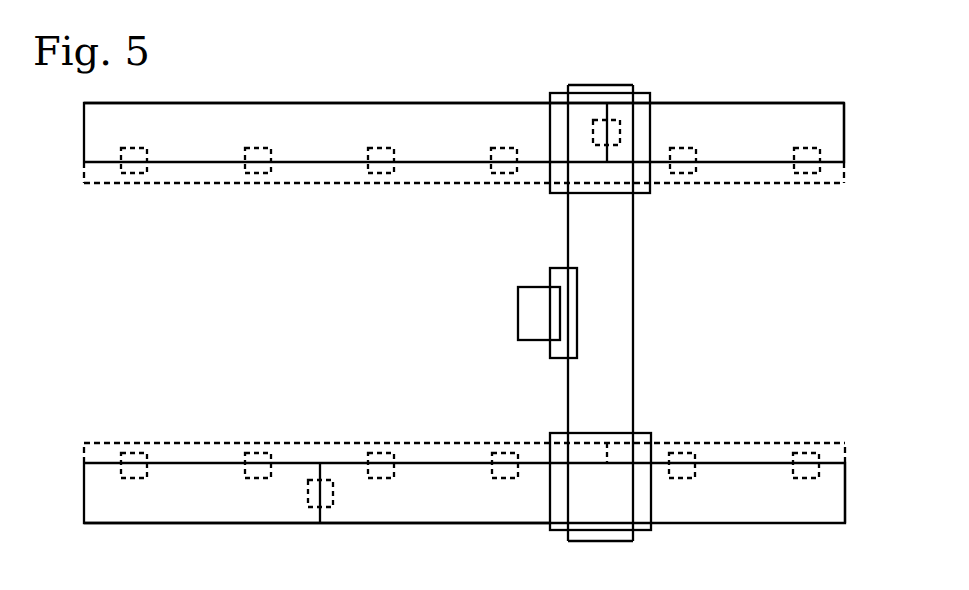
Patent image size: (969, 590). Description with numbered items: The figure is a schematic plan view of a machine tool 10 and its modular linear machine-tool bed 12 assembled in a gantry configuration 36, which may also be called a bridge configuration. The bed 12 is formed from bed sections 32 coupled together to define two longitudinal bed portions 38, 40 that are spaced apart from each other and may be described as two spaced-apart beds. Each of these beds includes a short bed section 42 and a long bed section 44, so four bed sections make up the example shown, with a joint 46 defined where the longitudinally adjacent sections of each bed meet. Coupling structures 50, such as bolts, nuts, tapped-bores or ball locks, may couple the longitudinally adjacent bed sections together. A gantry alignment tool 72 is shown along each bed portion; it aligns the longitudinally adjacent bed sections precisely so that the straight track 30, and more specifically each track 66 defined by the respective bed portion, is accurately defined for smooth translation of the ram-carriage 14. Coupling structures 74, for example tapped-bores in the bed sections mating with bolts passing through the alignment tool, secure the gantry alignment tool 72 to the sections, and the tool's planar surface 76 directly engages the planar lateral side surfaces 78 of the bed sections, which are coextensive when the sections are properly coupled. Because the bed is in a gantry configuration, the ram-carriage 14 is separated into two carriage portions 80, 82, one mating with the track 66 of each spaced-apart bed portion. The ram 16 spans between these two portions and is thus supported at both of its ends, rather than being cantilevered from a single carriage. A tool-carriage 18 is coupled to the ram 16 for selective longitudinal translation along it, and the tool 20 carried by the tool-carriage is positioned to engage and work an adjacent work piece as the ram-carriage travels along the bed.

The machine tool 10 is at (804, 41).
The modular linear machine-tool bed 12 is at (687, 44).
The ram-carriage 14 is at (645, 87).
The ram 16 is at (633, 312).
The tool-carriage 18 is at (558, 268).
The tool 20 is at (518, 312).
The straight track 30 is at (791, 119).
The bed sections 32 is at (254, 87).
The gantry configuration 36 is at (749, 34).
The bed portion 38 is at (70, 131).
The bed portion 40 is at (70, 491).
The short bed section 42 is at (741, 102).
The long bed section 44 is at (306, 101).
The joint 46 is at (606, 110).
The coupling structures 50 is at (592, 130).
The tracks 66 is at (838, 128).
The gantry alignment tool 72 is at (420, 185).
The coupling structures 74 is at (145, 148).
The planar surface 76 is at (192, 157).
The planar surfaces 78 is at (226, 163).
The carriage portion 80 is at (550, 150).
The carriage portion 82 is at (550, 475).